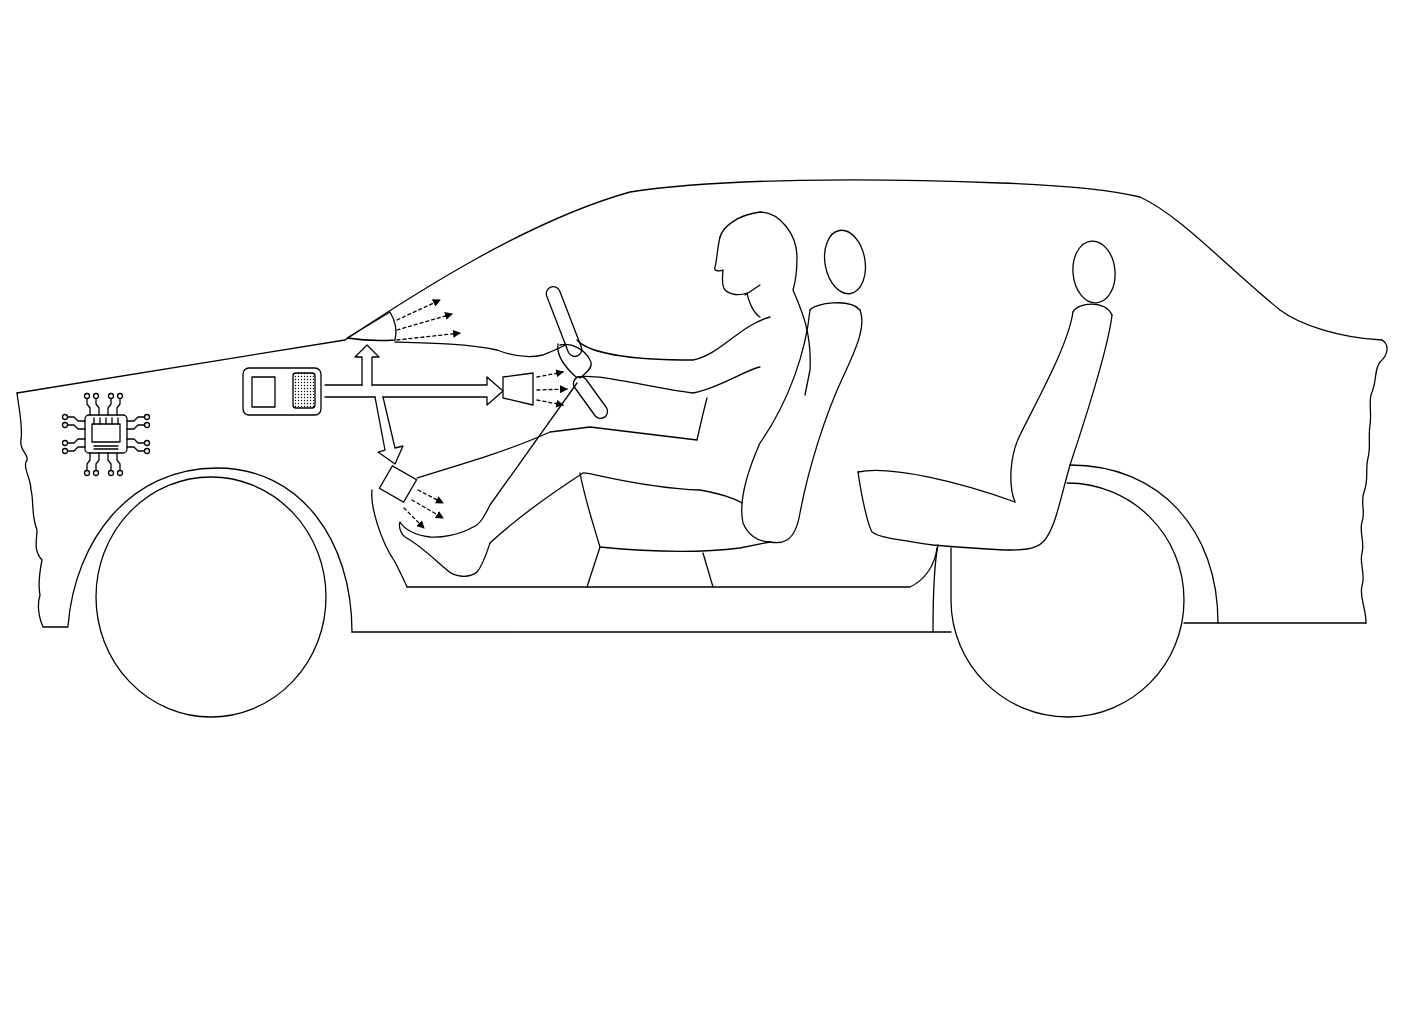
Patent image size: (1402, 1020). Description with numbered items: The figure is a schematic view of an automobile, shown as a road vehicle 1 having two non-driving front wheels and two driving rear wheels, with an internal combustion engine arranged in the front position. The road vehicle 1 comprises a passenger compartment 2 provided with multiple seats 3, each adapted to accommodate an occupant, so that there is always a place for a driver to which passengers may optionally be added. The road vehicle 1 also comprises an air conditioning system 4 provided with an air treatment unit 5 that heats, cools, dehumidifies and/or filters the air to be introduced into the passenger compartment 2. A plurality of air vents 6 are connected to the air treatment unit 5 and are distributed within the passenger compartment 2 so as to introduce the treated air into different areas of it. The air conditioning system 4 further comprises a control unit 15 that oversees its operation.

The road vehicle 1 is at (92, 811).
The passenger compartment 2 is at (648, 124).
The seats 3 is at (775, 507).
The air conditioning system 4 is at (292, 274).
The air treatment unit 5 is at (296, 388).
The air vents 6 is at (381, 312).
The control unit 15 is at (104, 433).